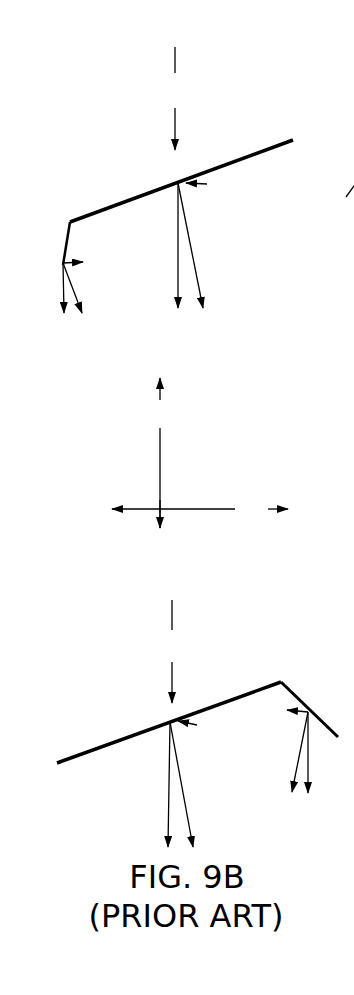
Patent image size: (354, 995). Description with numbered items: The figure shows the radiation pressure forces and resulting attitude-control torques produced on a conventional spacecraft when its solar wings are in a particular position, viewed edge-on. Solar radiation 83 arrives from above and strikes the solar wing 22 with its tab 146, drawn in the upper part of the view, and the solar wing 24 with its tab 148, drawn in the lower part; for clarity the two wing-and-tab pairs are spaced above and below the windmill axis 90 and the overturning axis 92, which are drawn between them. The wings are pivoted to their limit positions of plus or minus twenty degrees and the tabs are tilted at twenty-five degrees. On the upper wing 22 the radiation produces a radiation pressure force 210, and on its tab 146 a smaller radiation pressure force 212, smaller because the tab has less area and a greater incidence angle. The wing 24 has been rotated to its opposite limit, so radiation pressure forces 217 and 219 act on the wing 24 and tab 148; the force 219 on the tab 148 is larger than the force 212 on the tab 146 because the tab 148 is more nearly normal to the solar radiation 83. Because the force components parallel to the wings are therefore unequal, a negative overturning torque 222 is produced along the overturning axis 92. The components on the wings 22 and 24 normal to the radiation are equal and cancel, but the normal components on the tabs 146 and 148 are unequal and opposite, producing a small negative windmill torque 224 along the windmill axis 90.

The solar radiation 83 is at (173, 375).
The solar wing 22 is at (103, 207).
The tab 146 is at (67, 243).
The radiation pressure force 210 is at (195, 245).
The radiation pressure force 212 is at (84, 306).
The windmill axis 90 is at (159, 453).
The overturning axis 92 is at (224, 509).
The negative overturning torque 222 is at (145, 507).
The negative windmill torque 224 is at (152, 517).
The solar wing 24 is at (267, 680).
The tab 148 is at (296, 695).
The radiation pressure force 217 is at (193, 817).
The radiation pressure force 219 is at (300, 753).